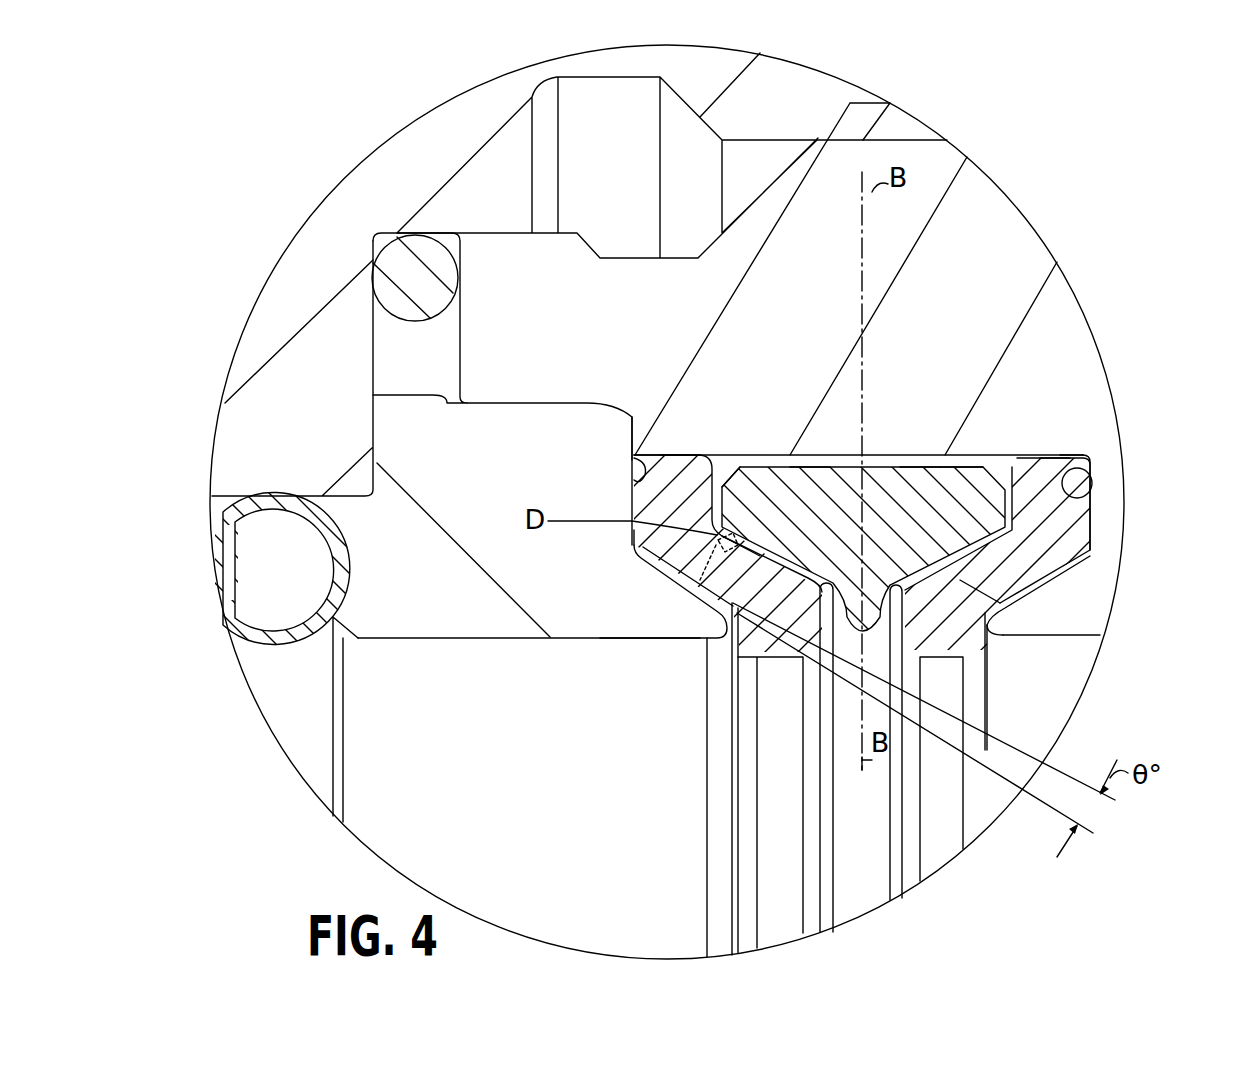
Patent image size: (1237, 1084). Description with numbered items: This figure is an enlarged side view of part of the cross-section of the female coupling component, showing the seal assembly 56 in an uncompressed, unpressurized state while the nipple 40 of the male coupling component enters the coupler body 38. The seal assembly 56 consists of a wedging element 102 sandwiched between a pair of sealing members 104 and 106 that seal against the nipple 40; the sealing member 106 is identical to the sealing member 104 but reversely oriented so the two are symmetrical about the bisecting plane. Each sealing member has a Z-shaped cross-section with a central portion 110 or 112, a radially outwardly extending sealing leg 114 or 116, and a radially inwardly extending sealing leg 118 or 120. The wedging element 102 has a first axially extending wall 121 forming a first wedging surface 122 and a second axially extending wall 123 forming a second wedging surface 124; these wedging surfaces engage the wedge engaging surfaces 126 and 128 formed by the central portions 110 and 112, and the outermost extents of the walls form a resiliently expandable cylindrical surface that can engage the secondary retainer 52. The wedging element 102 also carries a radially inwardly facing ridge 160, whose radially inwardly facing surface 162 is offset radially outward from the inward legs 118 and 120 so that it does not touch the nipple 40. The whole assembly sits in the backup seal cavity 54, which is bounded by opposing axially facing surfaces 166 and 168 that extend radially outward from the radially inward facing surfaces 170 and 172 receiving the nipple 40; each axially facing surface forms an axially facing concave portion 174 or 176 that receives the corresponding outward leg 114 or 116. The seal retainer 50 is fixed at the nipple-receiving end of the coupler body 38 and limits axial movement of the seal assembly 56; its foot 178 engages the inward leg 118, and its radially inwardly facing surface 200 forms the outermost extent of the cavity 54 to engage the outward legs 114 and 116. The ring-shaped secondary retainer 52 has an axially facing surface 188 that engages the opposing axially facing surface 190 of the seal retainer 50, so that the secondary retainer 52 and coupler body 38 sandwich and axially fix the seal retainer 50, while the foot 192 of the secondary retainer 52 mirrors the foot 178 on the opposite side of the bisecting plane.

The coupler body 38 is at (337, 203).
The nipple 40 is at (980, 812).
The seal retainer 50 is at (412, 618).
The secondary retainer 52 is at (1023, 262).
The backup seal cavity 54 is at (852, 655).
The seal assembly 56 is at (1078, 445).
The wedging element 102 is at (880, 445).
The sealing member 104 is at (625, 500).
The sealing member 106 is at (1091, 462).
The central portion 110 is at (690, 568).
The central portion 112 is at (985, 505).
The radially outwardly extending sealing leg 114 is at (670, 477).
The radially outwardly extending sealing leg 116 is at (1050, 475).
The radially inwardly extending sealing leg 118 is at (757, 642).
The radially inwardly extending sealing leg 120 is at (1000, 655).
The first axially extending wall 121 is at (795, 510).
The first wedging surface 122 is at (747, 580).
The second axially extending wall 123 is at (915, 500).
The second wedging surface 124 is at (978, 556).
The wedge engaging surface 126 is at (720, 560).
The wedge engaging surface 128 is at (950, 455).
The radially inwardly facing ridge 160 is at (805, 672).
The radially inwardly facing surface 162 is at (870, 655).
The axially facing surface 166 is at (632, 457).
The axially facing surface 168 is at (1065, 468).
The radially inward facing surface 170 is at (653, 634).
The radially inward facing surface 172 is at (1065, 645).
The axially facing concave portion 174 is at (625, 548).
The axially facing concave portion 176 is at (1097, 560).
The foot 178 is at (690, 630).
The axially facing surface 188 is at (630, 417).
The axially facing surface 190 is at (637, 445).
The foot 192 is at (1027, 628).
The radially inwardly facing surface 200 is at (755, 640).